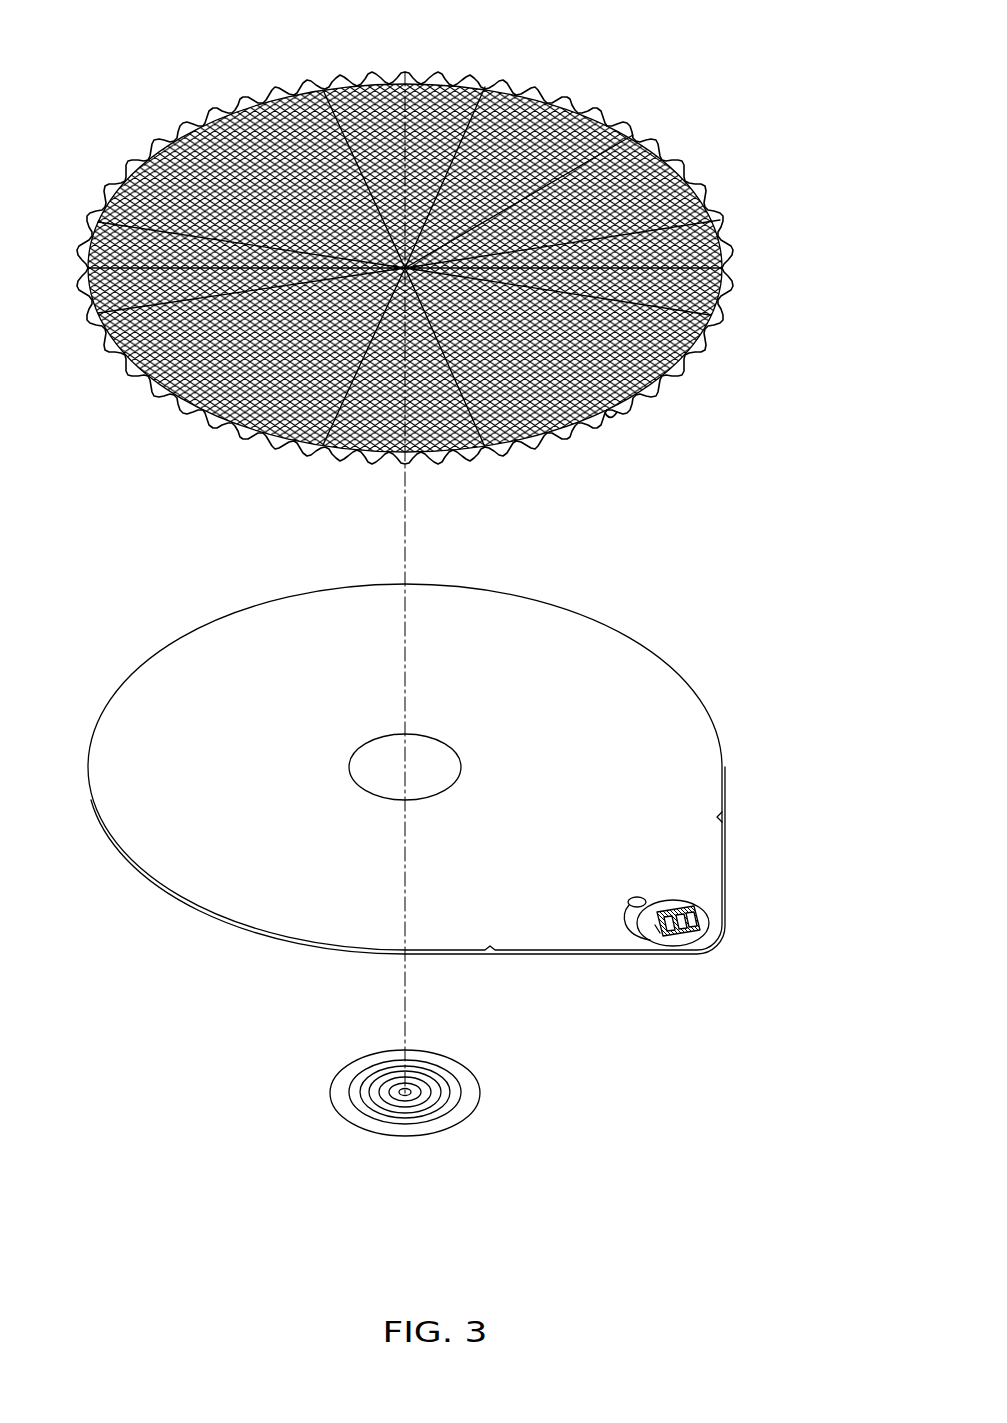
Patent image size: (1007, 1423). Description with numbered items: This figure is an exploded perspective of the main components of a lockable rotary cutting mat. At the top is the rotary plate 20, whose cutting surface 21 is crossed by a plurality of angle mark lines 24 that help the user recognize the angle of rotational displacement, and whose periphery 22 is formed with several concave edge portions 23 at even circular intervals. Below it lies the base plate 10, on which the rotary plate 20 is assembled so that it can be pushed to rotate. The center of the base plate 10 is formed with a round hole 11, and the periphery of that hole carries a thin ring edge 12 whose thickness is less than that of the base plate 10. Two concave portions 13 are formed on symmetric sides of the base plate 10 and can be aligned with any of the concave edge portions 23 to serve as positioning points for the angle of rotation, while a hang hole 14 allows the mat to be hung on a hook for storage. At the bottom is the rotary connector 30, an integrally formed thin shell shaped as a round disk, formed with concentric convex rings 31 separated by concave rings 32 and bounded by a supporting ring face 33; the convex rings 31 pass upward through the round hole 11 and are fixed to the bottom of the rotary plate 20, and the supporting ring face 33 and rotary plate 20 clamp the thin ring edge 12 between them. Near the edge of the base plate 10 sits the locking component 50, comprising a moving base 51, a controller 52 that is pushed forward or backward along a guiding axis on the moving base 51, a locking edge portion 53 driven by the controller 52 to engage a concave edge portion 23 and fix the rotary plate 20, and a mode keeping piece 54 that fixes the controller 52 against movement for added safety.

The base plate 10 is at (462, 787).
The round hole 11 is at (367, 743).
The thin ring edge 12 is at (347, 762).
The concave portion 13 is at (717, 817).
The hang hole 14 is at (637, 938).
The rotary plate 20 is at (454, 244).
The cutting surface 21 is at (215, 196).
The periphery 22 is at (268, 90).
The concave edge portion 23 is at (630, 408).
The angle mark line 24 is at (458, 84).
The rotary connector 30 is at (425, 1112).
The convex ring 31 is at (377, 1063).
The concave ring 32 is at (365, 1087).
The supporting ring face 33 is at (340, 1097).
The locking component 50 is at (715, 931).
The moving base 51 is at (683, 940).
The controller 52 is at (670, 937).
The locking edge portion 53 is at (645, 903).
The mode keeping piece 54 is at (708, 935).